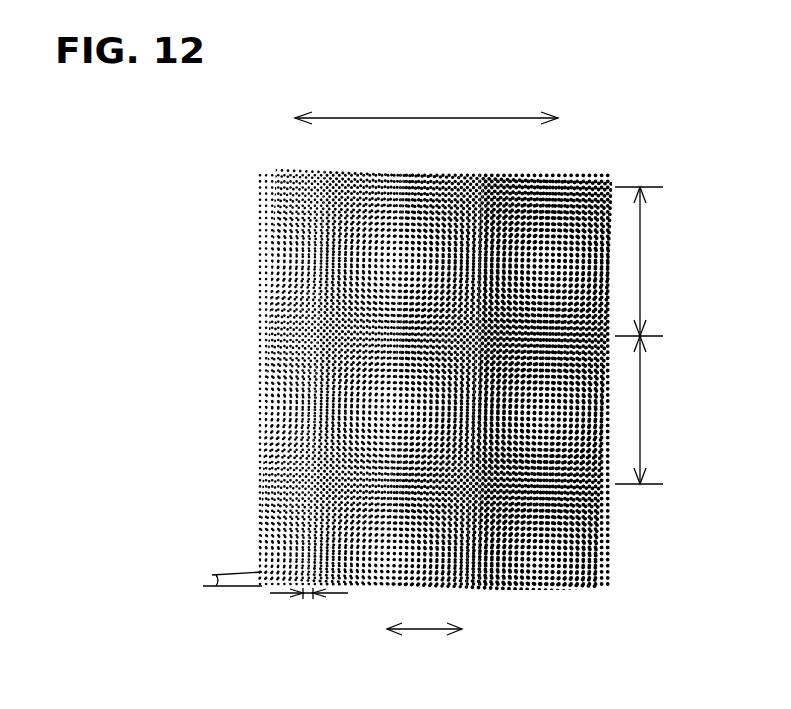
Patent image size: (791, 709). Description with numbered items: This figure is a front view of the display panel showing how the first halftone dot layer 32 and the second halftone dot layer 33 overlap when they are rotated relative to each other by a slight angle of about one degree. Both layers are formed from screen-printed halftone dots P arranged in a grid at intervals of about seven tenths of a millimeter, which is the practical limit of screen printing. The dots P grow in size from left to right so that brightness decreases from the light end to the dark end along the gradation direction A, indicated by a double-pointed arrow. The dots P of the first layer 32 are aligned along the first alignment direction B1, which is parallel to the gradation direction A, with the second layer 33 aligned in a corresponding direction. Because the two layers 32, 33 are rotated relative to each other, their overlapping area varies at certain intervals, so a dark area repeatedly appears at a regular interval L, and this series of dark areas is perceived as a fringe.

The first halftone dot layer 32 is at (254, 190).
The second halftone dot layer 33 is at (307, 165).
The halftone dots P is at (284, 172).
The interval L is at (640, 250).
The gradation direction A is at (484, 118).
The first alignment direction B1 is at (432, 630).